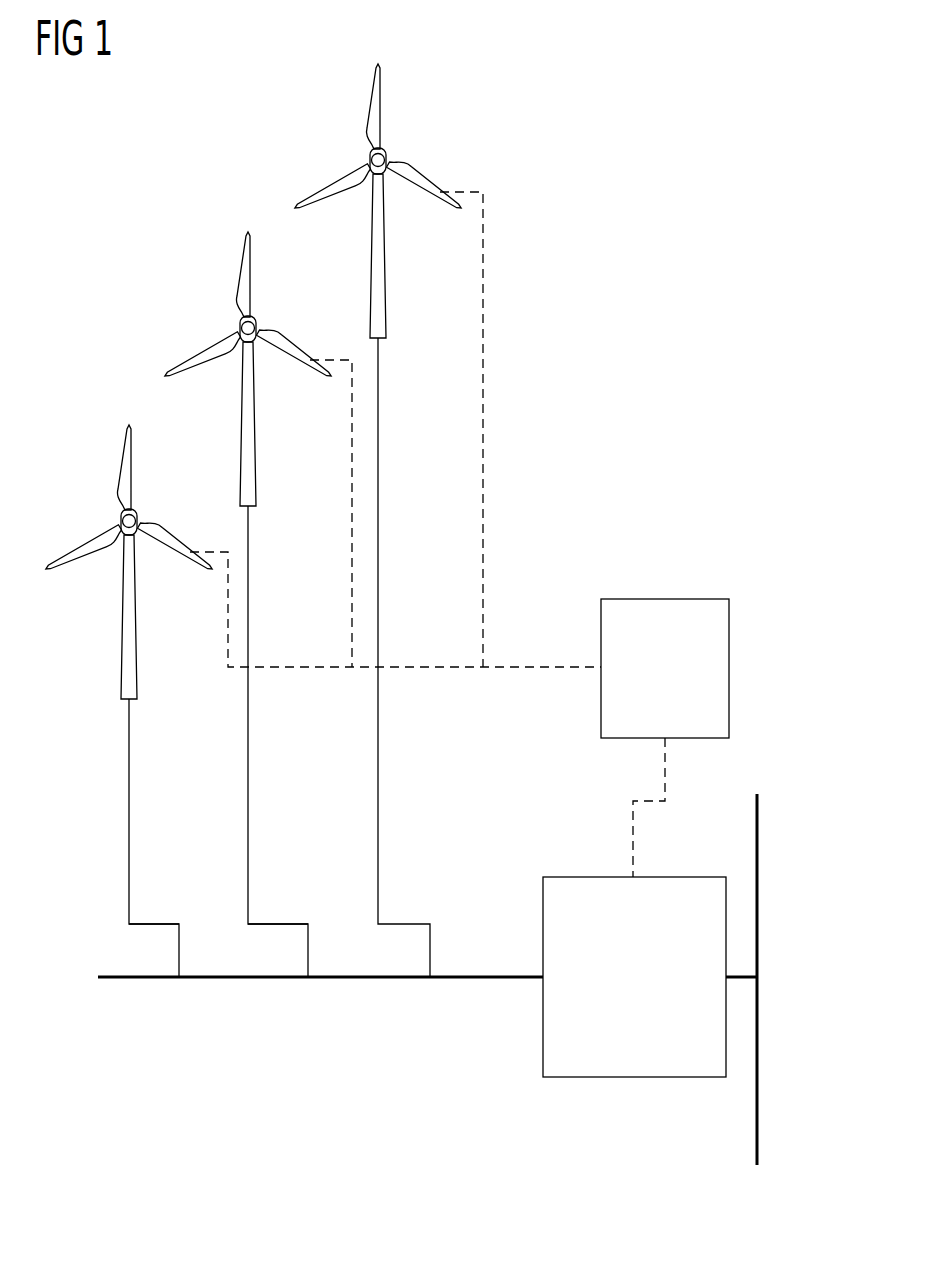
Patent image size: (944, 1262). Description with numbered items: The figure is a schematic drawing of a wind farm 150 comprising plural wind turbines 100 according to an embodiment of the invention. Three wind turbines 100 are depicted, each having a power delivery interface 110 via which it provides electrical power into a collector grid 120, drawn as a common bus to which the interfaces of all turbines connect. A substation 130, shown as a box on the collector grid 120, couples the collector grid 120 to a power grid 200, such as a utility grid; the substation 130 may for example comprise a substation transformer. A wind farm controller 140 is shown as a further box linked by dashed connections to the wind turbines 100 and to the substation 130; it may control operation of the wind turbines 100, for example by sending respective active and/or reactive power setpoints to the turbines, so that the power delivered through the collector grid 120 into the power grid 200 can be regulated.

The wind turbine 100 is at (315, 140).
The power delivery interface 110 is at (379, 350).
The collector grid 120 is at (160, 924).
The substation 130 is at (635, 1077).
The wind farm controller 140 is at (663, 599).
The wind farm 150 is at (640, 126).
The power grid 200 is at (757, 838).